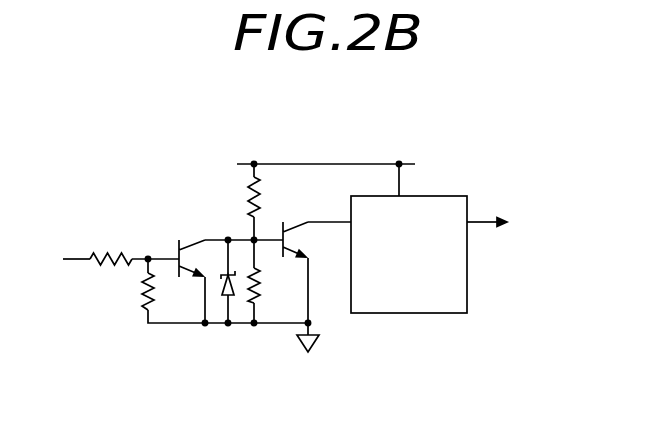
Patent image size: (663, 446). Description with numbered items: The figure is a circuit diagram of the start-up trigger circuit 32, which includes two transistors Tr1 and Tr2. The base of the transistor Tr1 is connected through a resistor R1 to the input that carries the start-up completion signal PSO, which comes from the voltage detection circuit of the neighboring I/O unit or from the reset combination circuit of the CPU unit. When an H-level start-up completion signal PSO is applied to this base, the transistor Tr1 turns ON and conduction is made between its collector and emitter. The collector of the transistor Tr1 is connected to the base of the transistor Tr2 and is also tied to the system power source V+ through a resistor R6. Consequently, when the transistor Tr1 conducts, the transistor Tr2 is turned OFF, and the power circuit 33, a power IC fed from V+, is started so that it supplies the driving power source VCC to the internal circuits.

The start-up trigger circuit 32 is at (120, 162).
The power circuit 33 is at (458, 195).
The resistor R1 is at (111, 244).
The resistor R6 is at (272, 197).
The transistor Tr1 is at (188, 244).
The transistor Tr2 is at (313, 239).